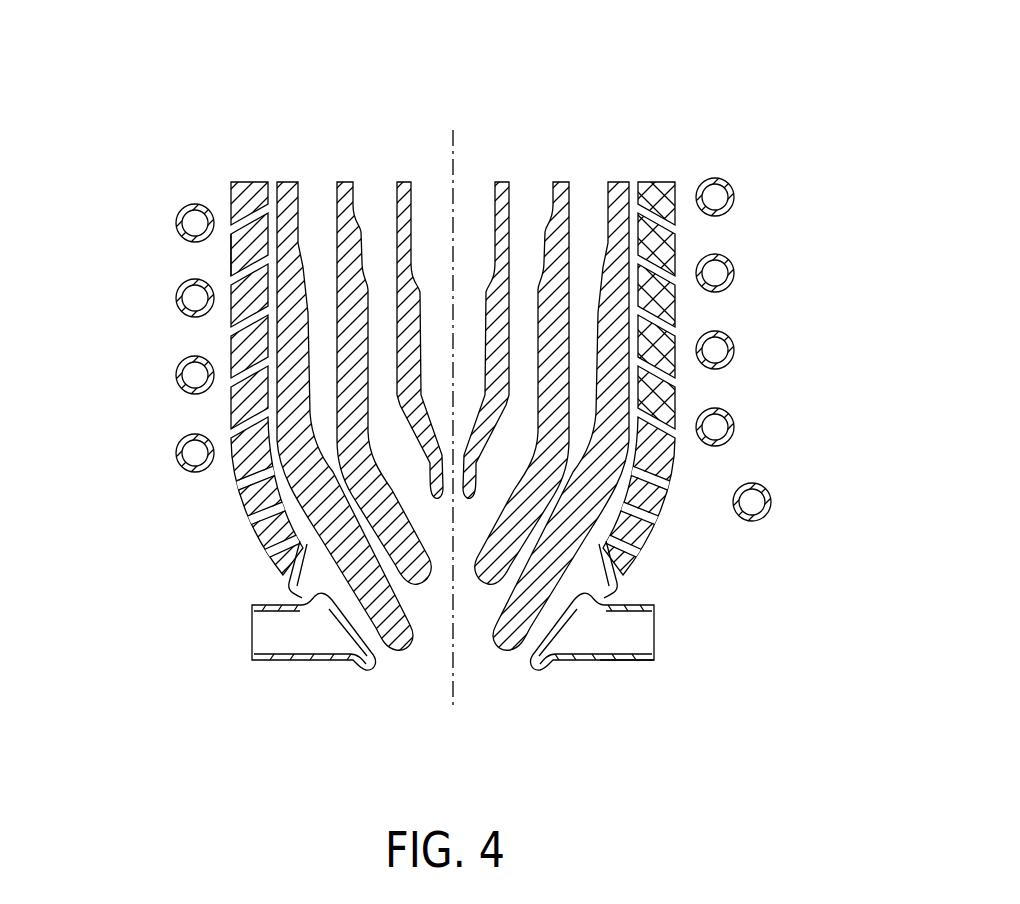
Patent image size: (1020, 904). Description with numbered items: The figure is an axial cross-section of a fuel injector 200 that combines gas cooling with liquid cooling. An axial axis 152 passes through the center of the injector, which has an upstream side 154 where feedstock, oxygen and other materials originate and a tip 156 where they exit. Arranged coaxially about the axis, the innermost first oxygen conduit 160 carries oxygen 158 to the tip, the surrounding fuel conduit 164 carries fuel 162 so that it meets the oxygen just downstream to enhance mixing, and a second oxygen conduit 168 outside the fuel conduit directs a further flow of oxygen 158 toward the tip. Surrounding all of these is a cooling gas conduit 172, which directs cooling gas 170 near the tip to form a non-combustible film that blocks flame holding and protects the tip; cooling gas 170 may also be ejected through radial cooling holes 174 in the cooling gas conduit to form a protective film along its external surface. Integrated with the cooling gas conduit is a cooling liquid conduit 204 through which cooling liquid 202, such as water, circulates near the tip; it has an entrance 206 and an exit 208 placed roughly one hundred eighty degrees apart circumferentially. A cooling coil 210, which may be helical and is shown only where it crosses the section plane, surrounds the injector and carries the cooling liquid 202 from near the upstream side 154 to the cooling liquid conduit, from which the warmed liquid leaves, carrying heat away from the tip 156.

The axial axis 152 is at (453, 158).
The upstream side 154 is at (115, 223).
The tip 156 is at (427, 726).
The oxygen 158 is at (320, 191).
The first oxygen conduit 160 is at (500, 190).
The fuel 162 is at (377, 192).
The fuel conduit 164 is at (557, 190).
The second oxygen conduit 168 is at (620, 190).
The cooling gas 170 is at (270, 191).
The cooling gas conduit 172 is at (663, 190).
The radial cooling holes 174 is at (229, 237).
The fuel injector 200 is at (713, 53).
The cooling liquid 202 is at (716, 197).
The cooling liquid conduit 204 is at (625, 662).
The entrance 206 is at (656, 637).
The exit 208 is at (252, 637).
The cooling coil 210 is at (731, 191).